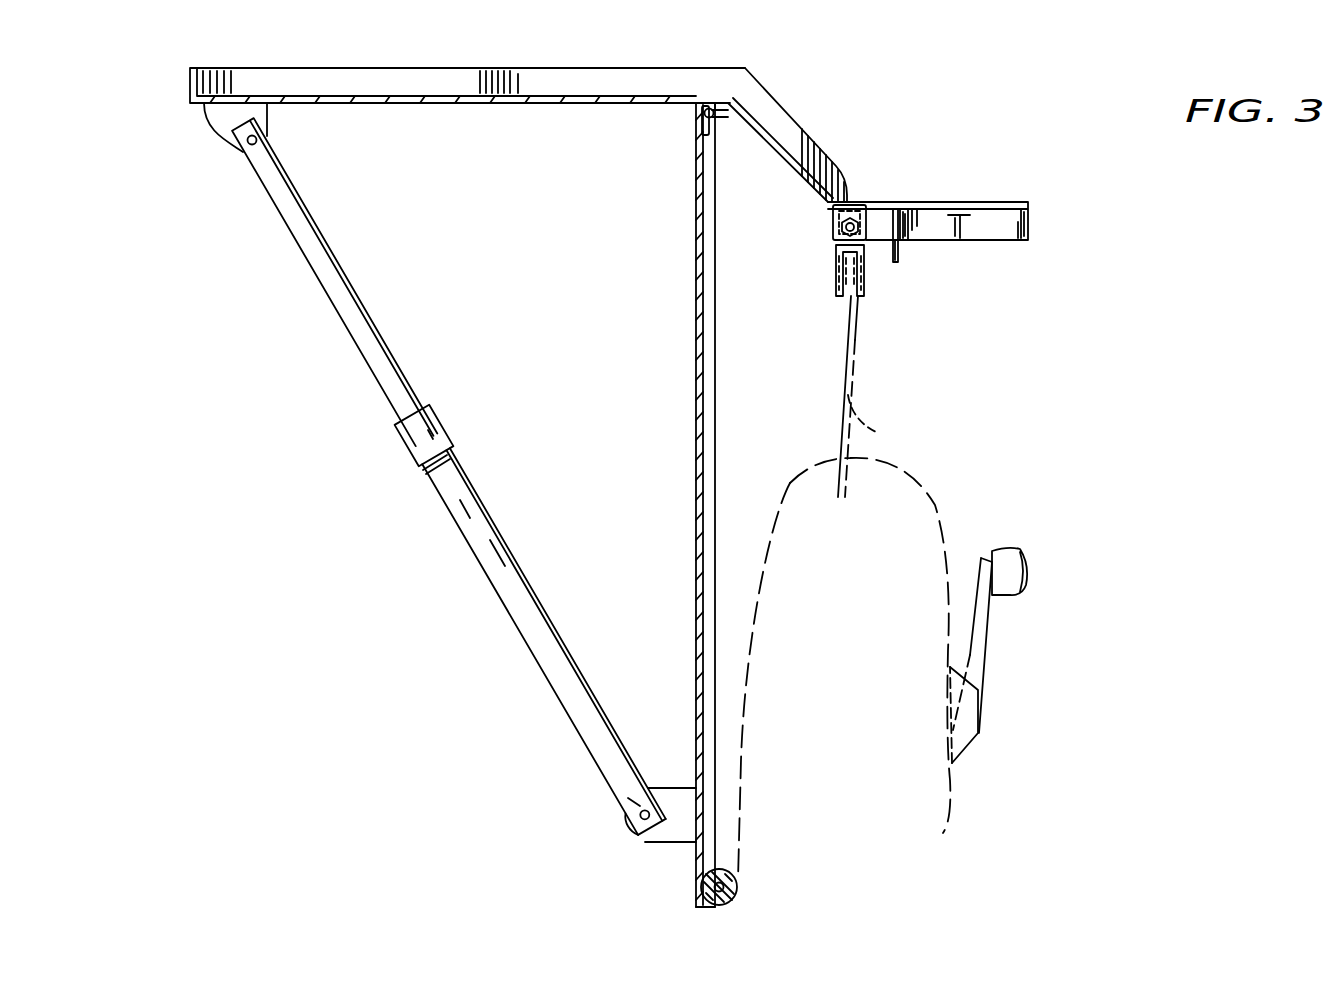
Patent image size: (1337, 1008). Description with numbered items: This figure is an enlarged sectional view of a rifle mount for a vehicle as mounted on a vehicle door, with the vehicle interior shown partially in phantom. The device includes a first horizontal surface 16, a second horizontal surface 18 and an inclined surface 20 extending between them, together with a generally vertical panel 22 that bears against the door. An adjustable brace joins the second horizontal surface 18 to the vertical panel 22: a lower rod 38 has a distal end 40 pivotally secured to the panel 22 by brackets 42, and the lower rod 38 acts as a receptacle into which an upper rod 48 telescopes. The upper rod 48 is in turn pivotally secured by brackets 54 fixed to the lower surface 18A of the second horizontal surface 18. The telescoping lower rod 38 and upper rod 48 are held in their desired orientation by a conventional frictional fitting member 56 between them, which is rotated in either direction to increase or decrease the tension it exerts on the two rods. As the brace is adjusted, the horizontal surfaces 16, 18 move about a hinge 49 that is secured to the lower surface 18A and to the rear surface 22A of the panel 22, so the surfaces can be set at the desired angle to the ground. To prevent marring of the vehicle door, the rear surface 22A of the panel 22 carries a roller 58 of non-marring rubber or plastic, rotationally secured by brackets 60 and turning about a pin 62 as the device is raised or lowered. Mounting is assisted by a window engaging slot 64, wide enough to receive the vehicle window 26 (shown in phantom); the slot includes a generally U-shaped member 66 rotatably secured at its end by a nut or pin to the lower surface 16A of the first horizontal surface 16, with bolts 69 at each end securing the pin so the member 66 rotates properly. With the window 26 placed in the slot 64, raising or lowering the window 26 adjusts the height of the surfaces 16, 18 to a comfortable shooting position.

The first horizontal surface 16 is at (975, 203).
The lower surface of first horizontal surface 16A is at (963, 209).
The second horizontal surface 18 is at (393, 82).
The lower surface of second horizontal surface 18A is at (485, 104).
The inclined surface 20 is at (812, 144).
The vertical panel 22 is at (695, 618).
The rear surface of vertical panel 22A is at (712, 322).
The vehicle window 26 is at (877, 432).
The lower rod 38 is at (520, 628).
The distal end of lower rod 40 is at (600, 745).
The brackets 42 is at (655, 845).
The upper rod 48 is at (354, 334).
The hinge 49 is at (748, 100).
The brackets 54 is at (222, 125).
The frictional fitting member 56 is at (452, 434).
The roller 58 is at (738, 890).
The brackets 60 is at (697, 905).
The pin 62 is at (736, 870).
The window engaging slot 64 is at (855, 309).
The U-shaped member 66 is at (866, 272).
The bolts 69 is at (834, 226).